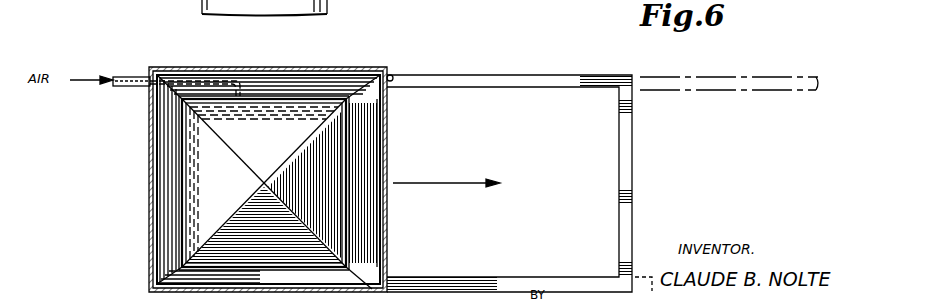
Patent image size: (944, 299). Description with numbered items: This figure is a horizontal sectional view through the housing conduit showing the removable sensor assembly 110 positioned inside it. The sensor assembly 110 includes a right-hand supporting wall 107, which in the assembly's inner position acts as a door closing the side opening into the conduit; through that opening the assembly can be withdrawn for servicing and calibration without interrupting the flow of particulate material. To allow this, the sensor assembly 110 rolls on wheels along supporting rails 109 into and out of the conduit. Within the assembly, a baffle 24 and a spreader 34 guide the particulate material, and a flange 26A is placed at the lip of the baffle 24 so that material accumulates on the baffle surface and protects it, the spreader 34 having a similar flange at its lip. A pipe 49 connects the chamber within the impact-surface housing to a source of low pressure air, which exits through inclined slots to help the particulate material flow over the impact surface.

The pipe 49 is at (128, 77).
The removable sensor assembly 110 is at (172, 151).
The spreader 34 is at (163, 185).
The flange 26A is at (180, 240).
The right-hand supporting wall 107 is at (387, 138).
The baffle 24 is at (381, 163).
The supporting rails 109 is at (583, 88).